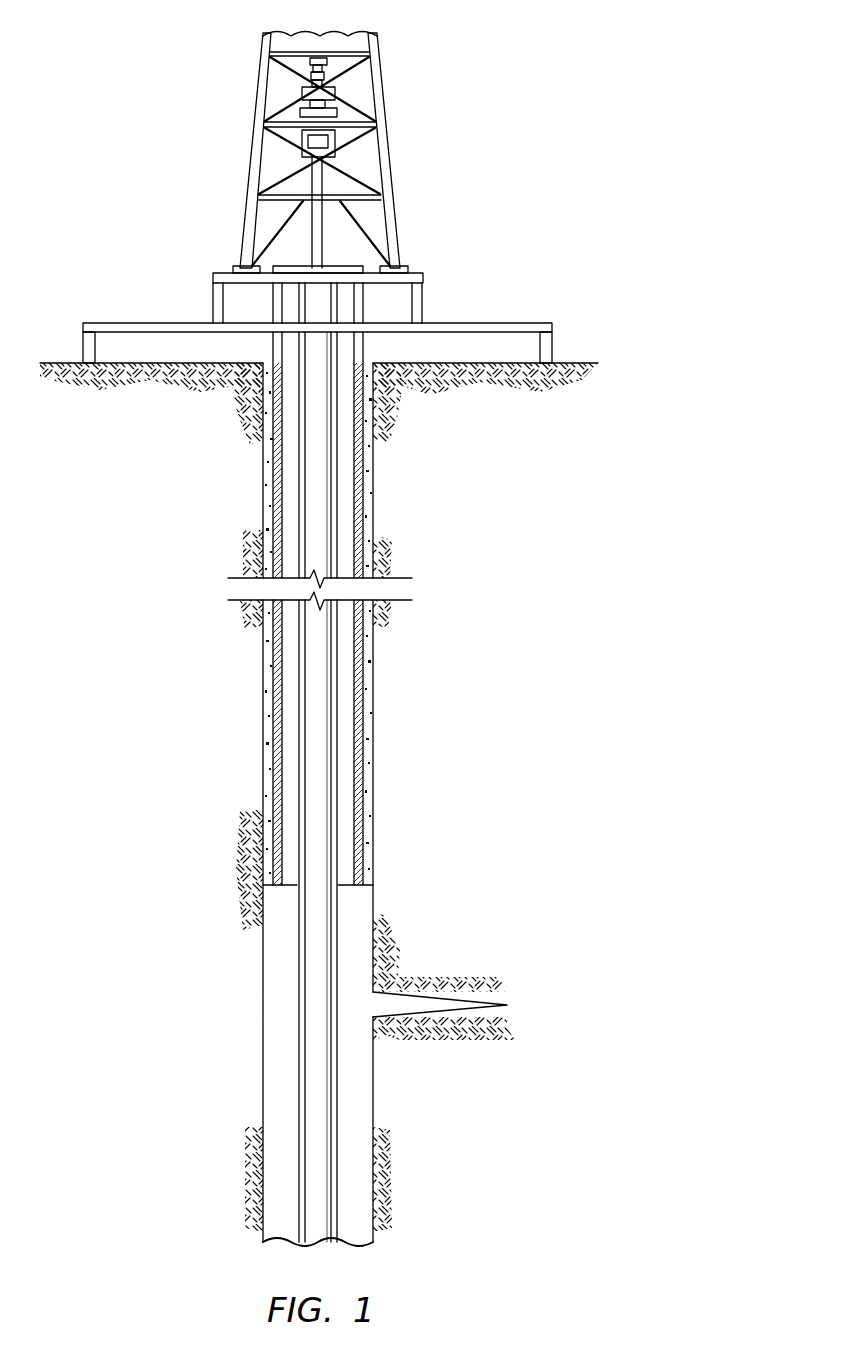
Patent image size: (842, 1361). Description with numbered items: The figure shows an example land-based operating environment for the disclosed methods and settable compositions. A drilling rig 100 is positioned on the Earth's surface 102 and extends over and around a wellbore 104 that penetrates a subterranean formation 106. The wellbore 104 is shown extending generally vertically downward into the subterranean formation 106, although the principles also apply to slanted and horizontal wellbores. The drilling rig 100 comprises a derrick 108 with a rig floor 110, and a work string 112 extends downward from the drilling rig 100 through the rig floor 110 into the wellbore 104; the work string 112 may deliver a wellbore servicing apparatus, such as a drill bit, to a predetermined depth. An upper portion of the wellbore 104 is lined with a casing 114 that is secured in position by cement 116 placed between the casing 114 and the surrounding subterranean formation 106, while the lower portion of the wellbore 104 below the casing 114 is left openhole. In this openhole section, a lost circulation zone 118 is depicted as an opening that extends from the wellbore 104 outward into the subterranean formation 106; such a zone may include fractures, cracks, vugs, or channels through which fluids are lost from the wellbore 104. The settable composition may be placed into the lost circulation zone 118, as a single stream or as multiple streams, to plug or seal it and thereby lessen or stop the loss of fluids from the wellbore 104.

The drilling rig 100 is at (505, 130).
The Earth's surface 102 is at (577, 362).
The wellbore 104 is at (256, 487).
The subterranean formation 106 is at (410, 375).
The derrick 108 is at (258, 88).
The rig floor 110 is at (123, 322).
The work string 112 is at (338, 722).
The casing 114 is at (266, 758).
The cement 116 is at (263, 803).
The lost circulation zone 118 is at (524, 997).